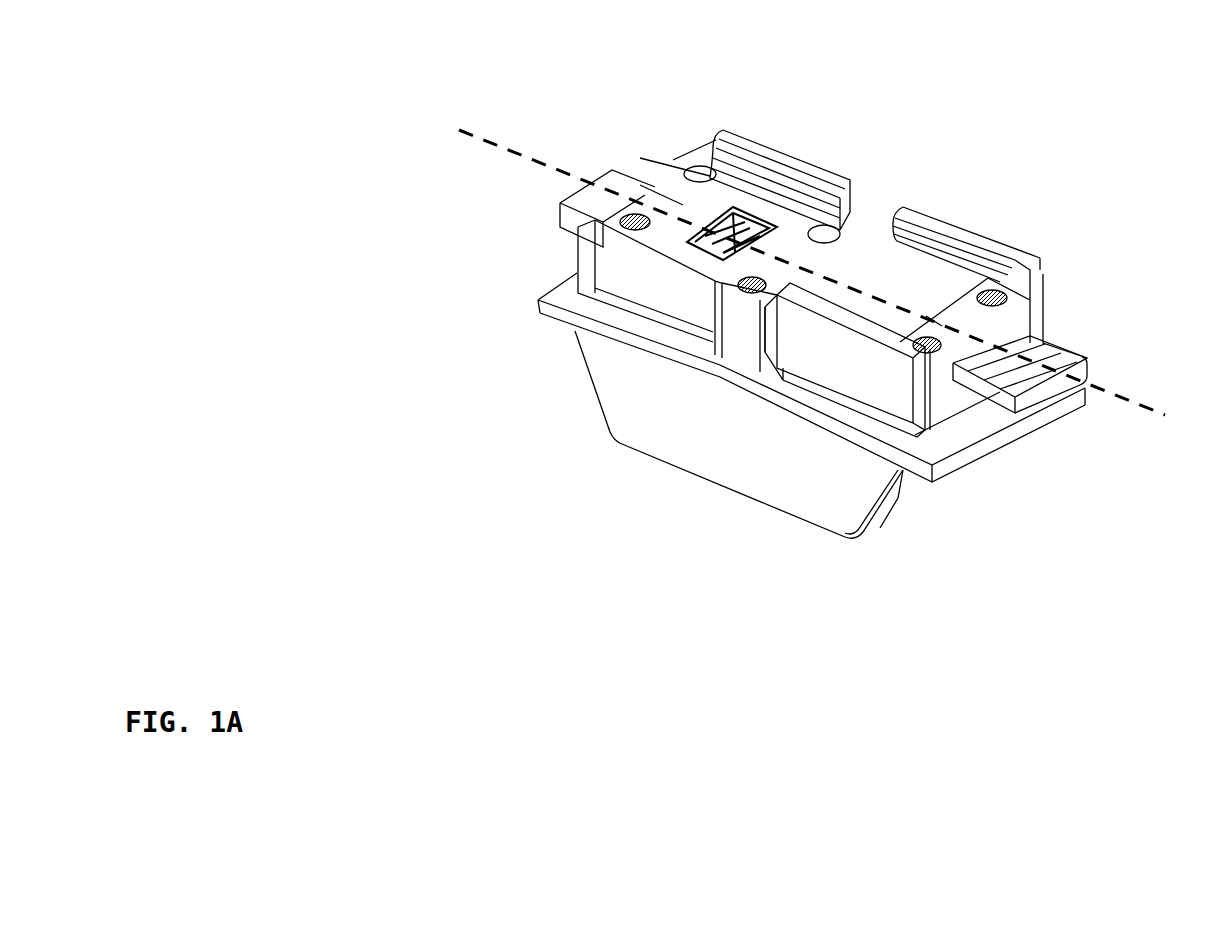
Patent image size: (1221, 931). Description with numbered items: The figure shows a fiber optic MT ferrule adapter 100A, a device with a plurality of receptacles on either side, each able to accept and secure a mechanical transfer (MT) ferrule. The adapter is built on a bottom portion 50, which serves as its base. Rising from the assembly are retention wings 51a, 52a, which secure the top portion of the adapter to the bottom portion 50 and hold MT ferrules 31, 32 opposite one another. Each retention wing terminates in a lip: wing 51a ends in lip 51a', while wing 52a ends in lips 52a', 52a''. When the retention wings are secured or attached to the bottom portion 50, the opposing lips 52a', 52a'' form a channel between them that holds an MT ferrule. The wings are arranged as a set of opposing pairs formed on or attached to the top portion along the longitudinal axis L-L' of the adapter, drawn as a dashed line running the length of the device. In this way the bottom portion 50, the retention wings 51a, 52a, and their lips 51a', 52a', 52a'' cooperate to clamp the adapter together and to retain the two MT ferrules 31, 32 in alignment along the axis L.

The MT ferrule adapter 100A is at (291, 73).
The bottom portion 50 is at (648, 468).
The retention wing 51a is at (536, 275).
The lip 51a' is at (750, 133).
The retention wing 52a is at (873, 362).
The lip 52a' is at (1067, 311).
The lip 52a'' is at (996, 470).
The MT ferrule 31 is at (703, 189).
The MT ferrule 32 is at (947, 321).
The longitudinal axis L is at (812, 296).